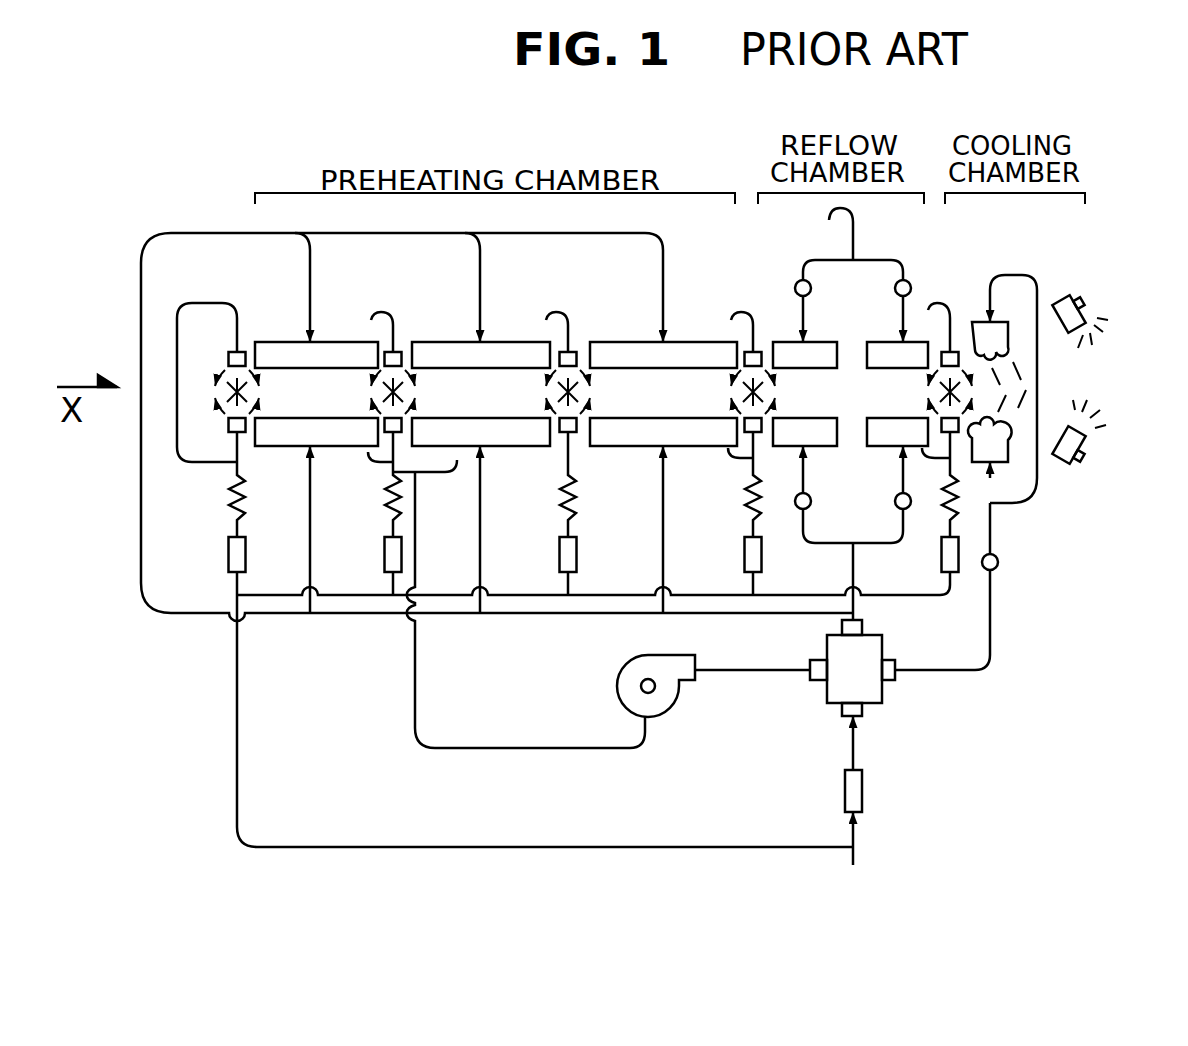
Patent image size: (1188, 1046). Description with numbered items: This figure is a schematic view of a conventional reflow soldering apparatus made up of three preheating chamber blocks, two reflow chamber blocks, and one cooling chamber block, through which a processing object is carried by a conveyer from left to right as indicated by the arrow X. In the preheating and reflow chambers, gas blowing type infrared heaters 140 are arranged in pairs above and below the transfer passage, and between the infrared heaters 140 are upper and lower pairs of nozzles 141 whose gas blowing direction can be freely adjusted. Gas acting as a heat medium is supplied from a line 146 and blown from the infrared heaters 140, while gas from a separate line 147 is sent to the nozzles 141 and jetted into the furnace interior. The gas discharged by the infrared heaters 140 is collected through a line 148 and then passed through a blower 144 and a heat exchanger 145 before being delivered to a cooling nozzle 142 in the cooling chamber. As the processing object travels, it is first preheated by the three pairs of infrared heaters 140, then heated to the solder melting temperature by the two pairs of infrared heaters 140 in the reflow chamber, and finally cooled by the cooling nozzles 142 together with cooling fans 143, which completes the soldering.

The gas blowing type infrared heater 140 is at (342, 341).
The nozzle 141 is at (400, 350).
The cooling nozzle 142 is at (975, 322).
The cooling fan 143 is at (1086, 302).
The blower 144 is at (665, 708).
The heat exchanger 145 is at (885, 700).
The line 146 is at (523, 615).
The line 147 is at (485, 848).
The line 148 is at (522, 750).